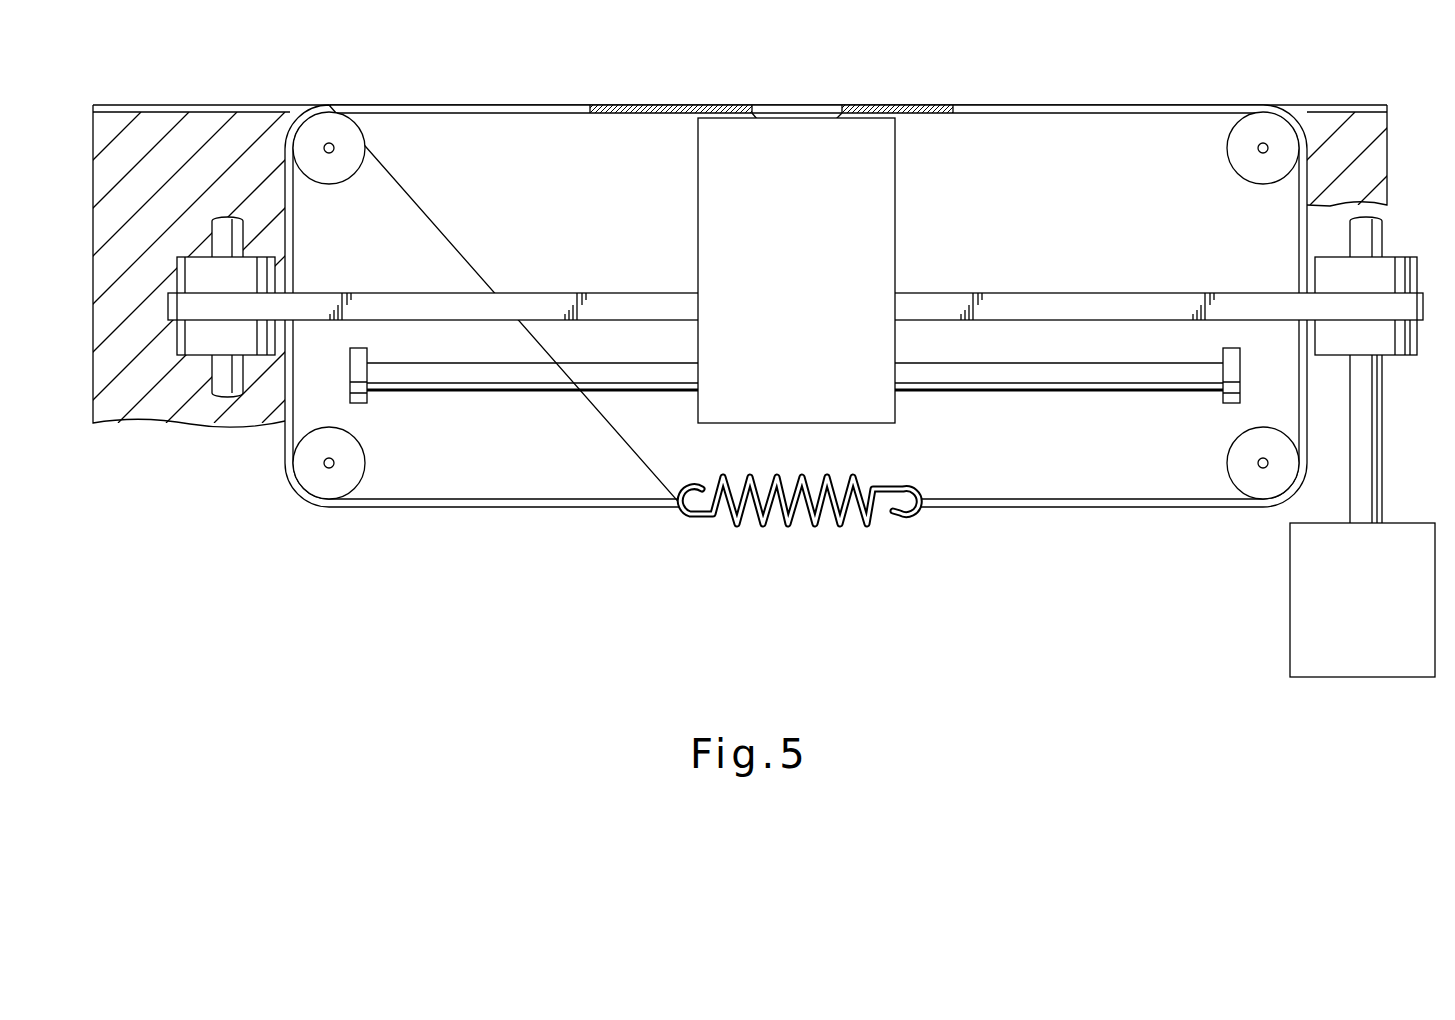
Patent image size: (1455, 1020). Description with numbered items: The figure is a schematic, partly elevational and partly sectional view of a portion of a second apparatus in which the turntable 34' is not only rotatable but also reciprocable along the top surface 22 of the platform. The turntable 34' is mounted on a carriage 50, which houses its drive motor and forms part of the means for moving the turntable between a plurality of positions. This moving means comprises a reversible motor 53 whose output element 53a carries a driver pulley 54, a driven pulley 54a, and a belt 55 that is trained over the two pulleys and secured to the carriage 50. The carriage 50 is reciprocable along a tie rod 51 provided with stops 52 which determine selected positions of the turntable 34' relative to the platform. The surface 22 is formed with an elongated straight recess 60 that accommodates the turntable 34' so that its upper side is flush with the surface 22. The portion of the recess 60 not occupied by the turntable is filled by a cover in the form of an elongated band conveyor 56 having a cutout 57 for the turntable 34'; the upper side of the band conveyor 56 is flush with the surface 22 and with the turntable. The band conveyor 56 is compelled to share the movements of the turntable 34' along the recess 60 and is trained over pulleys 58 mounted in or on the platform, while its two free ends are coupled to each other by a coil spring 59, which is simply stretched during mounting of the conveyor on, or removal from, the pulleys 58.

The top surface 22 is at (141, 104).
The recess 60 is at (218, 104).
The band conveyor 56 is at (1066, 105).
The cutout 57 is at (752, 113).
The turntable 34' is at (805, 77).
The pulleys 58 is at (345, 157).
The belt 55 is at (198, 271).
The driven pulley 54a is at (248, 277).
The driver pulley 54 is at (1395, 271).
The carriage 50 is at (871, 216).
The tie rod 51 is at (1028, 375).
The stops 52 is at (368, 403).
The output element 53a is at (1358, 442).
The motor 53 is at (1320, 615).
The coil spring 59 is at (808, 523).